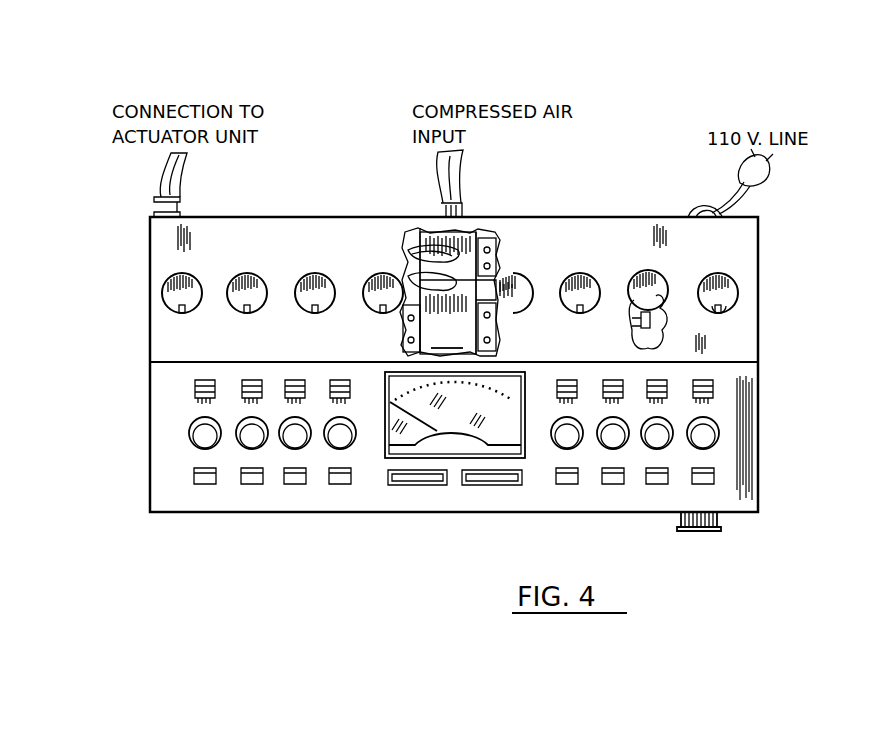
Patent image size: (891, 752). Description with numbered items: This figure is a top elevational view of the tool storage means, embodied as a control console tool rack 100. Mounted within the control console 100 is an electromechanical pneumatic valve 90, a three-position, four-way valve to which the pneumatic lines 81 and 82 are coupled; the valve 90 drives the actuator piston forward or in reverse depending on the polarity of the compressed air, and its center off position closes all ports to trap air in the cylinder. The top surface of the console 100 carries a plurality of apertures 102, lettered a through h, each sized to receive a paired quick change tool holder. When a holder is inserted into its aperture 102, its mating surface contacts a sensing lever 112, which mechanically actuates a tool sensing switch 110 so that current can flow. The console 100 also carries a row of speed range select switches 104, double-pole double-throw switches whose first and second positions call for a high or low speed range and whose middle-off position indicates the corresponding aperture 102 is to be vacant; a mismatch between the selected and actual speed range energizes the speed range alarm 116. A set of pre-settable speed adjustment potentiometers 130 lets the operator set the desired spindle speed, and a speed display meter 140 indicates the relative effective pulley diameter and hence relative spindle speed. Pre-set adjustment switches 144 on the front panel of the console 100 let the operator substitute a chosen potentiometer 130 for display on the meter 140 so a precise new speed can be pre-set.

The control console tool rack 100 is at (752, 479).
The apertures 102 is at (733, 258).
The speed range select switches 104 is at (195, 380).
The tool sensing switch 110 is at (635, 322).
The sensing lever 112 is at (725, 303).
The speed range alarm 116 is at (681, 531).
The pre-settable speed adjustment potentiometers 130 is at (291, 440).
The speed display meter 140 is at (450, 425).
The pre-set adjustment switches 144 is at (205, 484).
The pneumatic line 81 is at (422, 228).
The pneumatic line 82 is at (470, 232).
The electromechanical pneumatic valve 90 is at (456, 292).